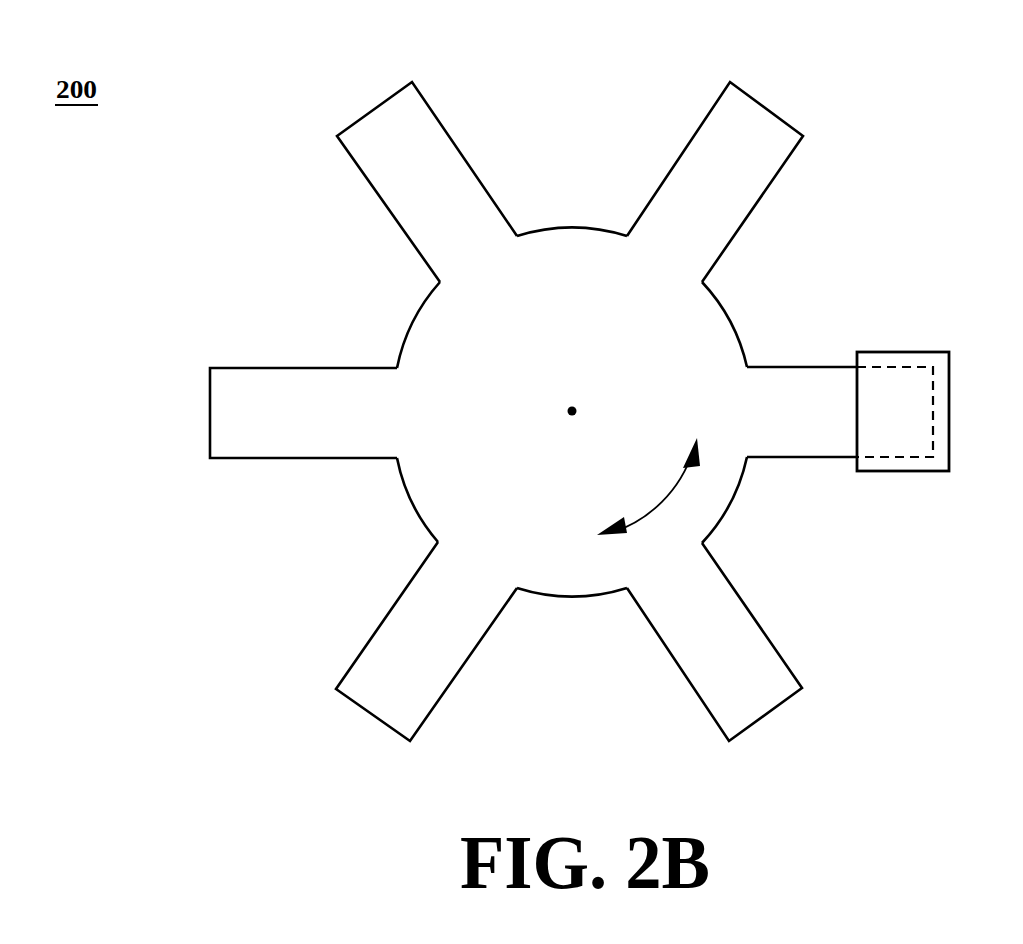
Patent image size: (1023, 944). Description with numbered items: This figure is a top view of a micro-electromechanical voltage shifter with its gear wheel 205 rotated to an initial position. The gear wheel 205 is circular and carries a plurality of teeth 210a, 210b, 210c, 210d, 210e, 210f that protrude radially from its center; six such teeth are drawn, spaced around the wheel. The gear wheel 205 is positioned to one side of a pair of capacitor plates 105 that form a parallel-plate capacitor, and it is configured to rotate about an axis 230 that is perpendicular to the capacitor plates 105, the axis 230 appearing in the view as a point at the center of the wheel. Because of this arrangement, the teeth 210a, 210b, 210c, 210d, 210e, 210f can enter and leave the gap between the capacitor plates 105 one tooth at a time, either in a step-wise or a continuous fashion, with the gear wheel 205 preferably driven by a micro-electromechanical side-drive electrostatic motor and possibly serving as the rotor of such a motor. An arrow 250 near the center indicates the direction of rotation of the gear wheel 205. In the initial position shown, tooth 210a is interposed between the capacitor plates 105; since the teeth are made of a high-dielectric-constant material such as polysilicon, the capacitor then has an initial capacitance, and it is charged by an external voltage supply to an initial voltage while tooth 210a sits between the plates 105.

The gear wheel 205 is at (684, 747).
The tooth 210a is at (798, 366).
The tooth 210b is at (777, 710).
The tooth 210c is at (373, 720).
The tooth 210d is at (210, 413).
The tooth 210e is at (373, 105).
The tooth 210f is at (772, 107).
The capacitor plates 105 is at (917, 351).
The axis 230 is at (572, 406).
The arrow 250 is at (661, 502).